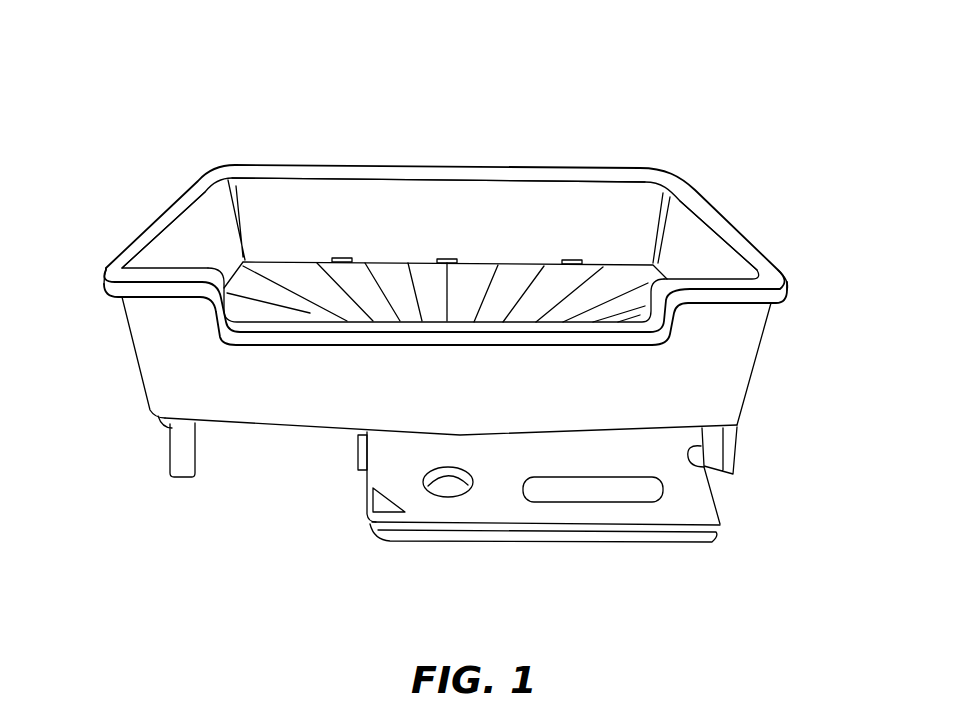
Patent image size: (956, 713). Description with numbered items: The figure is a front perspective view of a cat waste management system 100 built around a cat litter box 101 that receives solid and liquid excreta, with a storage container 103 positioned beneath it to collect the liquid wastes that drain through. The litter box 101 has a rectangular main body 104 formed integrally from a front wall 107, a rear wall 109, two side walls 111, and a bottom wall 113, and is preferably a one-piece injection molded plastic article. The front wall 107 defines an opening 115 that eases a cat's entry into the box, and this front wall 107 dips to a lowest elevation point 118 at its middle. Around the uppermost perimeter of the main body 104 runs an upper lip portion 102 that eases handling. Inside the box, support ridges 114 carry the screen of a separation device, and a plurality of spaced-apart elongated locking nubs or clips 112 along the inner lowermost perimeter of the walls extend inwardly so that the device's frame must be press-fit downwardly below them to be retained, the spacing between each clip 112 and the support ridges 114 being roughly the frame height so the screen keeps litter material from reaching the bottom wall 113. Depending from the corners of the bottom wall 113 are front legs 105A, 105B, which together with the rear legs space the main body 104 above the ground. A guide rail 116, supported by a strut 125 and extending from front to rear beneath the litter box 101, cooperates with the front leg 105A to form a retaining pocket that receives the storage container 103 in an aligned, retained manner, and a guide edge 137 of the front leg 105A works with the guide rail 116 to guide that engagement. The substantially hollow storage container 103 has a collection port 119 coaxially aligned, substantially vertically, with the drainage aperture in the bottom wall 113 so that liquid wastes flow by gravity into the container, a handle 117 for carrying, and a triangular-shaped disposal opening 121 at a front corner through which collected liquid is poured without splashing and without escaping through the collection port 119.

The cat waste management system 100 is at (203, 78).
The cat litter box 101 is at (770, 270).
The upper lip portion 102 is at (104, 302).
The storage container 103 is at (703, 534).
The main body 104 is at (137, 366).
The front leg 105A is at (740, 442).
The front leg 105B is at (178, 463).
The front wall 107 is at (728, 358).
The rear wall 109 is at (494, 207).
The side walls 111 is at (186, 229).
The locking nubs or clips 112 is at (342, 257).
The bottom wall 113 is at (425, 270).
The support ridges 114 is at (290, 288).
The opening 115 is at (212, 333).
The guide rail 116 is at (360, 486).
The handle 117 is at (597, 493).
The lowest elevation point 118 is at (480, 429).
The collection port 119 is at (457, 487).
The disposal opening 121 is at (367, 525).
The strut 125 is at (358, 447).
The guide edge 137 is at (705, 469).